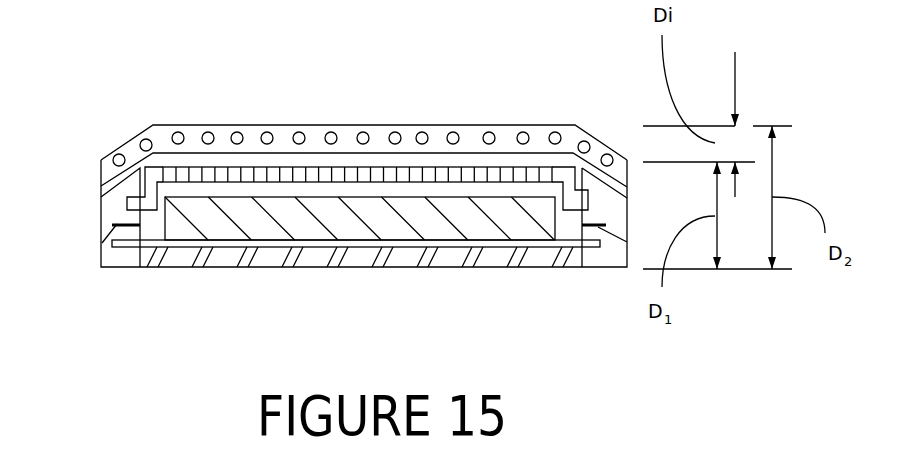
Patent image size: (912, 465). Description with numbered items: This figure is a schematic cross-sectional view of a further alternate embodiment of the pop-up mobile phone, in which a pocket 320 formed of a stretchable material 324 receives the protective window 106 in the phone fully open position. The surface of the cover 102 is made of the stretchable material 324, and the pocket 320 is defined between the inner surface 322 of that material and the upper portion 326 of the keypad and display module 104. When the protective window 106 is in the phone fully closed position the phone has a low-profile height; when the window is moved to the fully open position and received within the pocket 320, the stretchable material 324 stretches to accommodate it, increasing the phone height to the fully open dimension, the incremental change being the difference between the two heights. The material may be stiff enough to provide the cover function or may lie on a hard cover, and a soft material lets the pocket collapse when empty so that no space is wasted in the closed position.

The cover 102 is at (108, 205).
The keypad and display module 104 is at (300, 232).
The protective window 106 is at (488, 170).
The pocket 320 is at (178, 160).
The inner surface 322 is at (273, 152).
The stretchable material 324 is at (382, 142).
The upper portion 326 is at (217, 195).